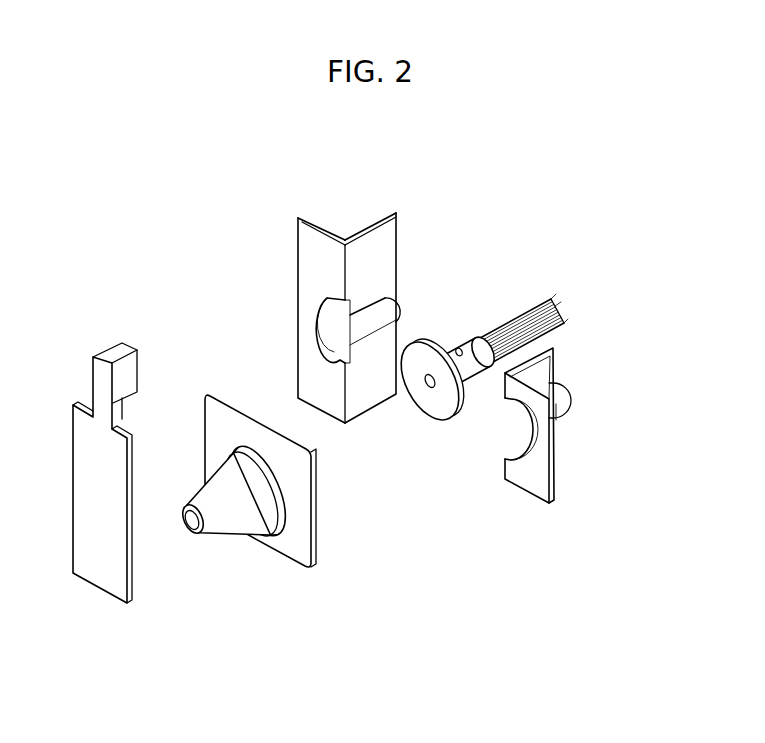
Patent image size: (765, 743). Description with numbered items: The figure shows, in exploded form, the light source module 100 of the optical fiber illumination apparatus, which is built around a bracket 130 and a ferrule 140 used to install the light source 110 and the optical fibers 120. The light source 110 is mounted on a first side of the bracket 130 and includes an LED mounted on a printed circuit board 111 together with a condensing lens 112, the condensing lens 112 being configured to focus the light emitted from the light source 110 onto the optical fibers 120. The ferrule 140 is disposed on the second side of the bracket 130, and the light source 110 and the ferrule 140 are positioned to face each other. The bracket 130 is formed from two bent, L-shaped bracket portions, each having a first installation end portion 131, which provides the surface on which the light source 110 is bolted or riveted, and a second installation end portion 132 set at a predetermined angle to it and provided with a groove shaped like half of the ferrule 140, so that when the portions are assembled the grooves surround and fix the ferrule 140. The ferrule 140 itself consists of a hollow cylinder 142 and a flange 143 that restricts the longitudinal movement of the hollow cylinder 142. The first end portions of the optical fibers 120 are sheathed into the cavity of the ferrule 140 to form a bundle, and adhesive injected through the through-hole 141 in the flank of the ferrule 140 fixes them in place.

The light source module 100 is at (160, 222).
The light source 110 is at (233, 616).
The printed circuit board 111 is at (110, 585).
The condensing lens 112 is at (218, 523).
The optical fibers 120 is at (566, 323).
The bracket 130 is at (402, 150).
The first installation end portion 131 is at (301, 216).
The second installation end portion 132 is at (387, 212).
The ferrule 140 is at (472, 480).
The through-hole 141 is at (459, 349).
The hollow cylinder 142 is at (475, 368).
The flange 143 is at (420, 408).